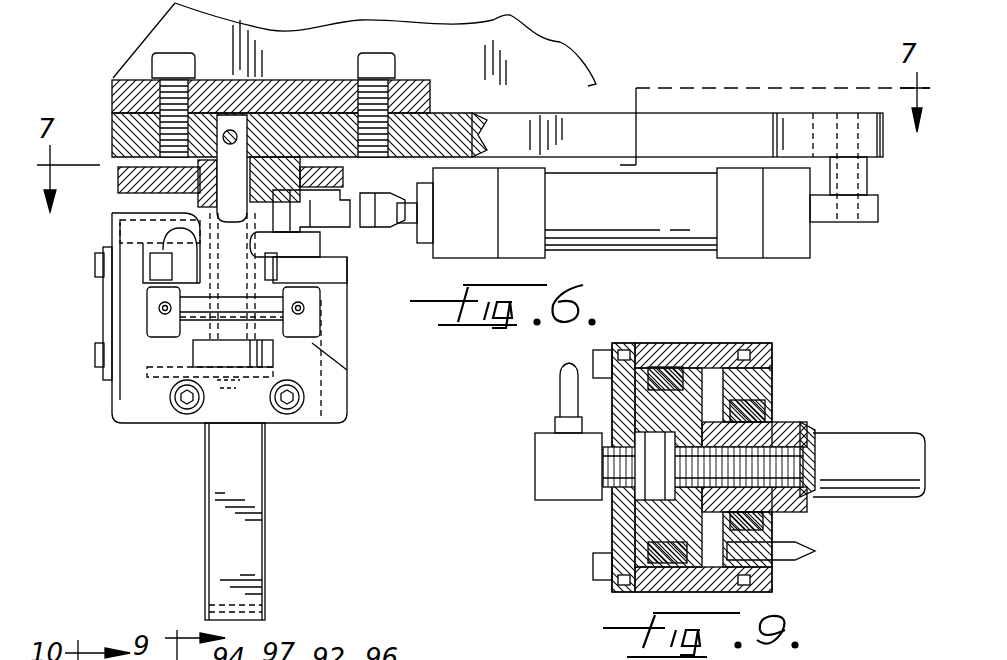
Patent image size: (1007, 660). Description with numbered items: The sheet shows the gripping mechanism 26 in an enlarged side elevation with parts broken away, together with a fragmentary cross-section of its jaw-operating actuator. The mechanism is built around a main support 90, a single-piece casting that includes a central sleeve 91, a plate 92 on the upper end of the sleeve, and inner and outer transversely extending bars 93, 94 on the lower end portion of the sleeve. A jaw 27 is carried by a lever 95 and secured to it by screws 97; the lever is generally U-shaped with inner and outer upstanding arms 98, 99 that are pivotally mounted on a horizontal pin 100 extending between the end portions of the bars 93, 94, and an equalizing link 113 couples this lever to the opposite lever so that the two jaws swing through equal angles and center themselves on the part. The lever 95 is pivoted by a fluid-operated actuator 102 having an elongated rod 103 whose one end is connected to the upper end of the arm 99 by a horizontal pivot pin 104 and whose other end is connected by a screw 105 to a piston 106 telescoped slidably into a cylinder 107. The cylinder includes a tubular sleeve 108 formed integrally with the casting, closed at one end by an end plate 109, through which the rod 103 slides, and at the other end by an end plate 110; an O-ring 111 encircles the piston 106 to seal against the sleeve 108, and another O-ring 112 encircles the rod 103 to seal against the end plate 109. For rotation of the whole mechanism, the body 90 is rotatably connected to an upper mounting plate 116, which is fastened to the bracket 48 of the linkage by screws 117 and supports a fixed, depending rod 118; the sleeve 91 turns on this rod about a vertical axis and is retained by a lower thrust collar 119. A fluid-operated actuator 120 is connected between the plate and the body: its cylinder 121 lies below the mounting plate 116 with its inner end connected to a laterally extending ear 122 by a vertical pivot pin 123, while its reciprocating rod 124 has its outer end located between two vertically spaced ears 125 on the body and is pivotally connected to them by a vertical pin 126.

In FIG. 6, the bracket 48 is at (372, 27).
In FIG. 6, the mounting plate 116 is at (463, 115).
In FIG. 6, the screws 117 is at (158, 88).
In FIG. 6, the rod 118 is at (276, 140).
In FIG. 6, the fluid-operated actuator 120 is at (662, 158).
In FIG. 6, the cylinder 121 is at (638, 240).
In FIG. 6, the ear 122 is at (867, 112).
In FIG. 6, the vertical pivot pin 123 is at (865, 170).
In FIG. 6, the reciprocating rod 124 is at (408, 225).
In FIG. 6, the ears 125 is at (345, 175).
In FIG. 6, the vertical pin 126 is at (318, 222).
In FIG. 6, the central sleeve 91 is at (262, 190).
In FIG. 6, the plate 92 is at (173, 186).
In FIG. 6, the rod 103 is at (170, 215).
In FIG. 9, the rod 103 is at (875, 490).
In FIG. 6, the horizontal pivot pin 104 is at (112, 236).
In FIG. 6, the gripping mechanism 26 is at (125, 293).
In FIG. 6, the equalizing link 113 is at (105, 322).
In FIG. 6, the outer upstanding arm 99 is at (122, 332).
In FIG. 6, the outer transversely extending bar 94 is at (163, 323).
In FIG. 6, the lower thrust collar 119 is at (200, 357).
In FIG. 6, the screws 97 is at (185, 415).
In FIG. 6, the jaw 27 is at (258, 520).
In FIG. 6, the main support 90 is at (276, 265).
In FIG. 6, the inner upstanding arm 98 is at (343, 347).
In FIG. 6, the inner transversely extending bar 93 is at (267, 317).
In FIG. 6, the horizontal pin 100 is at (300, 345).
In FIG. 6, the lever 95 is at (348, 420).
In FIG. 9, the fluid-operated actuator 102 is at (772, 337).
In FIG. 9, the screw 105 is at (775, 453).
In FIG. 9, the piston 106 is at (647, 532).
In FIG. 9, the cylinder 107 is at (708, 372).
In FIG. 9, the tubular sleeve 108 is at (648, 593).
In FIG. 9, the end plate 109 is at (770, 370).
In FIG. 9, the end plate 110 is at (613, 515).
In FIG. 9, the O-ring 111 is at (667, 377).
In FIG. 9, the O-ring 112 is at (760, 402).